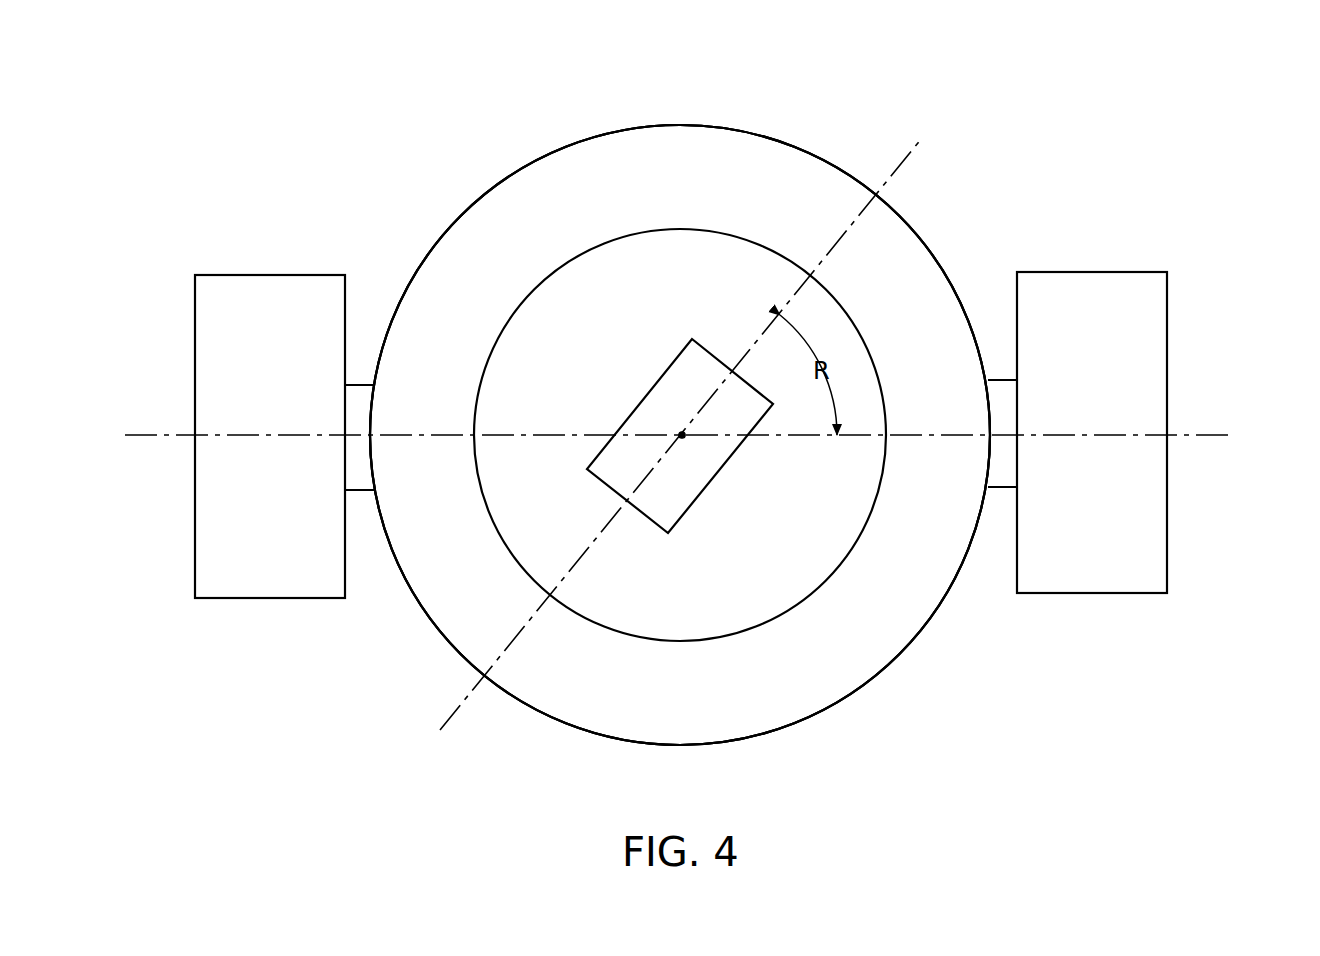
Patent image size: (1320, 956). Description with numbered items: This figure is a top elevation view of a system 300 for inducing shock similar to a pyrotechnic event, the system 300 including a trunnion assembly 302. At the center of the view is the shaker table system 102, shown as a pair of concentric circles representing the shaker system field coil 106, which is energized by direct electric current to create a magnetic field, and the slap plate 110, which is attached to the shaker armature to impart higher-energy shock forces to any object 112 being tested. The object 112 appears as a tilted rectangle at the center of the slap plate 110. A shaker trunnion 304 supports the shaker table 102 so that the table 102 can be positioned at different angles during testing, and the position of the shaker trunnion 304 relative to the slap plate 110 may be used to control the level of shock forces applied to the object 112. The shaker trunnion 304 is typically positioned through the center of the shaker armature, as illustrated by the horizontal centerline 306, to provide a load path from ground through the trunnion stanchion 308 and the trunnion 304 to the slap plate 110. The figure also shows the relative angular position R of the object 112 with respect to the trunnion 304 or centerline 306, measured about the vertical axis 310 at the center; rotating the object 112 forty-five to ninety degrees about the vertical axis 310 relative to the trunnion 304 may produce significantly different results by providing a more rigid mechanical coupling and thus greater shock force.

The shaker table system 102 is at (531, 182).
The shaker system field coil 106 is at (671, 126).
The slap plate 110 is at (702, 642).
The object 112 is at (680, 365).
The system for inducing shock 300 is at (1008, 126).
The trunnion assembly 302 is at (1174, 322).
The shaker trunnion 304 is at (1012, 402).
The centerline 306 is at (1213, 437).
The trunnion stanchion 308 is at (1088, 596).
The vertical axis 310 is at (684, 437).